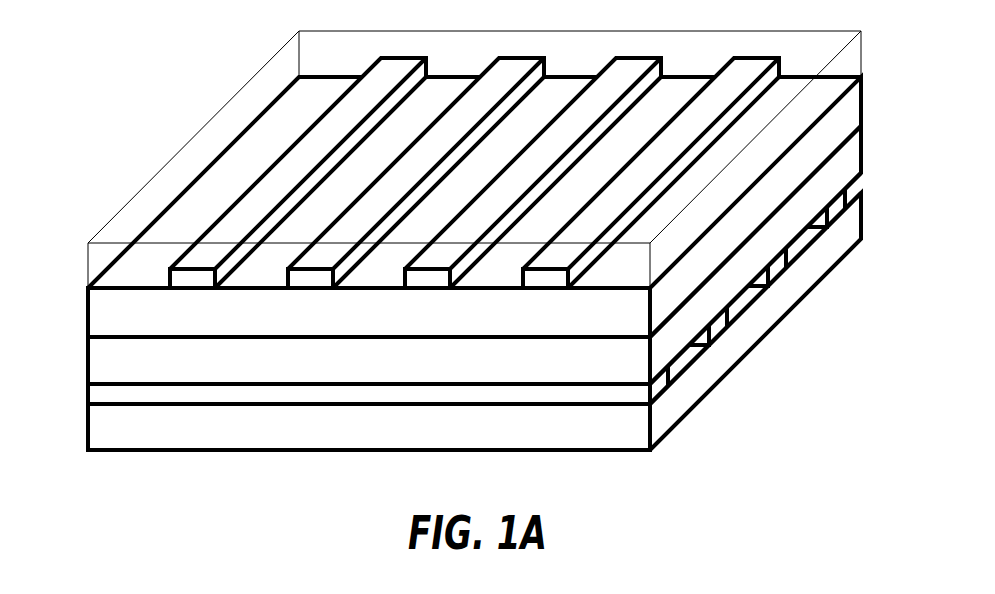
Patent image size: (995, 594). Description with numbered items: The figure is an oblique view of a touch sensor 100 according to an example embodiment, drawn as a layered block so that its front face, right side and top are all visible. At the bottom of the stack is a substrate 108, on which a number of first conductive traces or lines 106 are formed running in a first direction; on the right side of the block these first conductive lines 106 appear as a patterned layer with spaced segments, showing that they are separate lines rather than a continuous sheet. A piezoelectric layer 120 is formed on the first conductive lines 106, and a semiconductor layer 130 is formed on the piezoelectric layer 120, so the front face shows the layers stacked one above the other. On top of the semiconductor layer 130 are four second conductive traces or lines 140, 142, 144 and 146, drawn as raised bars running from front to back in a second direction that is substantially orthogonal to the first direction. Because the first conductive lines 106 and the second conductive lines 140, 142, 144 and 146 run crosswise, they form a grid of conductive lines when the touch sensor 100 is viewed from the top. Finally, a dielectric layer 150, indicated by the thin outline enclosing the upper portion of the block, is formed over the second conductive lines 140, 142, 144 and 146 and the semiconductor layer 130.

The touch sensor 100 is at (160, 44).
The first conductive lines 106 is at (88, 393).
The substrate 108 is at (88, 431).
The piezoelectric layer 120 is at (88, 357).
The semiconductor layer 130 is at (88, 315).
The second conductive line 140 is at (192, 282).
The second conductive line 142 is at (310, 282).
The second conductive line 144 is at (427, 282).
The second conductive line 146 is at (545, 282).
The dielectric layer 150 is at (88, 263).